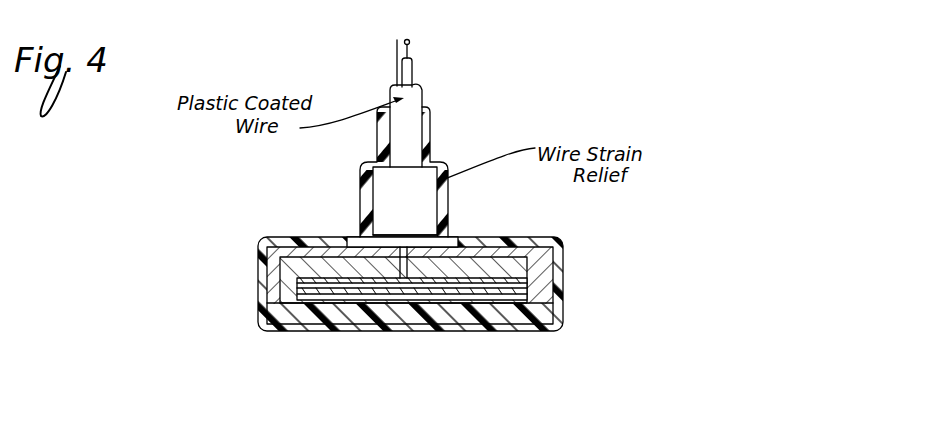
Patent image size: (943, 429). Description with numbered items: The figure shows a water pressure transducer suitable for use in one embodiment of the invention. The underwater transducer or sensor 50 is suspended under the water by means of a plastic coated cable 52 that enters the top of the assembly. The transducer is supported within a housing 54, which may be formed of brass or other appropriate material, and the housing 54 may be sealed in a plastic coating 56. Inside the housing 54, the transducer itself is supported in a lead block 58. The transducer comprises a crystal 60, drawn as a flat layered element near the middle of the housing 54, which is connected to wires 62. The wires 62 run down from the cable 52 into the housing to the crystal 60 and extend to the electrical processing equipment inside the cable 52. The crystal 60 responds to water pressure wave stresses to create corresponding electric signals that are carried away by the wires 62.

The underwater transducer 50 is at (232, 273).
The plastic coated cable 52 is at (404, 112).
The housing 54 is at (547, 287).
The plastic coating 56 is at (323, 240).
The lead block 58 is at (527, 268).
The crystal 60 is at (401, 300).
The wires 62 is at (412, 71).